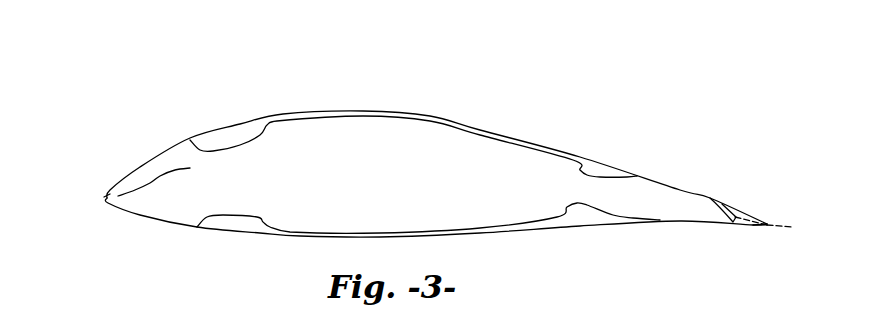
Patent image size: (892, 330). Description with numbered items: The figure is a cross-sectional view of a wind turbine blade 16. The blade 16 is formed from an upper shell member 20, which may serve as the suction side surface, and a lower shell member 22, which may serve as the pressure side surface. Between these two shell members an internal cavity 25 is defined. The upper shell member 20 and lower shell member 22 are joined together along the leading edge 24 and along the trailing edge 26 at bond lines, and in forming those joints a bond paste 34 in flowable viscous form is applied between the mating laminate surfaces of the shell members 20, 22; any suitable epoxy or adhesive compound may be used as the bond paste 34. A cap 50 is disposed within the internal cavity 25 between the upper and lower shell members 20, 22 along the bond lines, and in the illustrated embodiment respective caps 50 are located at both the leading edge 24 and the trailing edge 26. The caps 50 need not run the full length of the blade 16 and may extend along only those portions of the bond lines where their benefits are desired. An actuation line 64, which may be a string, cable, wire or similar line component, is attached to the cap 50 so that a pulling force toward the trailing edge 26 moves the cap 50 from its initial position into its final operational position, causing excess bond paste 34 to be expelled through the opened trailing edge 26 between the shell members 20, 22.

The wind turbine blade 16 is at (417, 155).
The upper shell member 20 is at (343, 110).
The lower shell member 22 is at (302, 238).
The leading edge 24 is at (108, 204).
The trailing edge 26 is at (757, 227).
The internal cavity 25 is at (523, 158).
The cap 50 is at (710, 198).
The bond paste 34 is at (742, 218).
The actuation line 64 is at (780, 228).